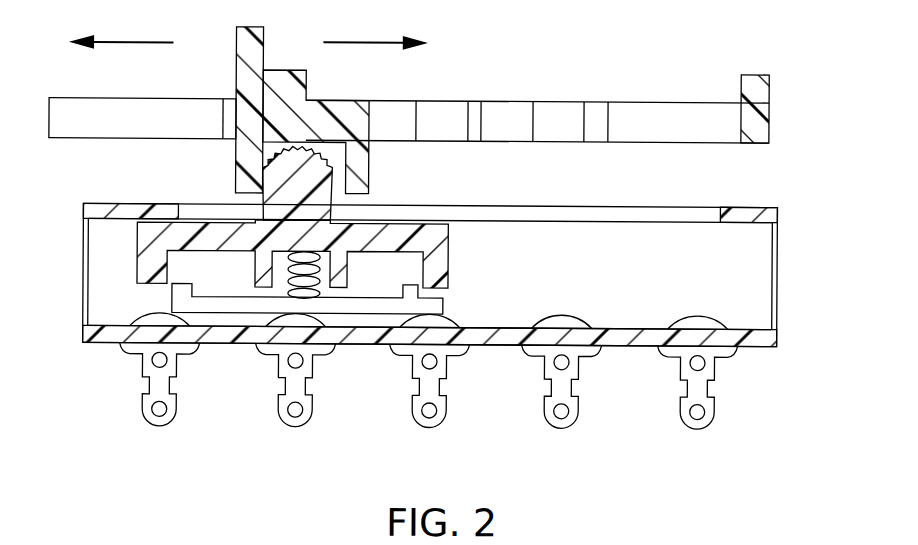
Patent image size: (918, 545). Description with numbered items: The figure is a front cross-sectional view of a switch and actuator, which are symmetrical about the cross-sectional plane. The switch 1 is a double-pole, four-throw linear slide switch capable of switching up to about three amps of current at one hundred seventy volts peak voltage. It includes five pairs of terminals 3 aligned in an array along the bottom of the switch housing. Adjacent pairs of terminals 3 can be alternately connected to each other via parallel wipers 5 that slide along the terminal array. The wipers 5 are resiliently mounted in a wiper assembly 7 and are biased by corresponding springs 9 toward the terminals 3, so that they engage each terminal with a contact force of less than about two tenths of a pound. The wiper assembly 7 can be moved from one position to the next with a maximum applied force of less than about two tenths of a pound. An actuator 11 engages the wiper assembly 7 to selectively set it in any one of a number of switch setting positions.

The switch 1 is at (787, 208).
The terminals 3 is at (550, 428).
The wipers 5 is at (447, 303).
The wiper assembly 7 is at (127, 224).
The springs 9 is at (289, 295).
The actuator 11 is at (367, 117).